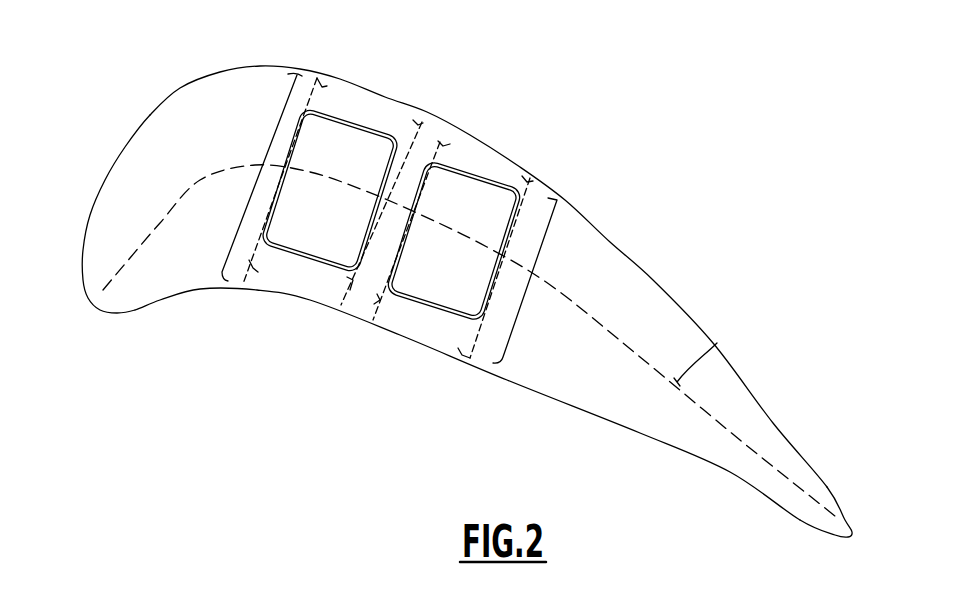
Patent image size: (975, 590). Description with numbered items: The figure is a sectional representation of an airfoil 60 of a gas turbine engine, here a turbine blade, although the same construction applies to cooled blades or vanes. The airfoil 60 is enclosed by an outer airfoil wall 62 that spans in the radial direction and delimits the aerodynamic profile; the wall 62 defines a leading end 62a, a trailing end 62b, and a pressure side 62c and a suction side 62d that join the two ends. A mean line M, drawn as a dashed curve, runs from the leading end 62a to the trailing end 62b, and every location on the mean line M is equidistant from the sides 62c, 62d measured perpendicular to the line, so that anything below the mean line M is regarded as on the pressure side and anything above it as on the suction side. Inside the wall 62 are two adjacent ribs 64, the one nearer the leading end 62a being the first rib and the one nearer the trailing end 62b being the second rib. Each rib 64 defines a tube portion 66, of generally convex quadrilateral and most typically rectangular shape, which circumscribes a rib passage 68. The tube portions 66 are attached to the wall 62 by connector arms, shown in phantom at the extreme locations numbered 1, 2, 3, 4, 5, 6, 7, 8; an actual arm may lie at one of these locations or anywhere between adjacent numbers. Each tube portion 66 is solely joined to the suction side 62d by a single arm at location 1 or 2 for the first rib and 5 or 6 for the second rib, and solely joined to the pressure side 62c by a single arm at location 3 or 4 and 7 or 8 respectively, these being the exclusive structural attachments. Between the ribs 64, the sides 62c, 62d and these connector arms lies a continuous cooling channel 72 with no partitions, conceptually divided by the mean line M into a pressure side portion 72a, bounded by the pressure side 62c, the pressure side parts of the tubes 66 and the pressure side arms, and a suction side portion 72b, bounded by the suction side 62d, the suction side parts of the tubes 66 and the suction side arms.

The airfoil 60 is at (668, 160).
The airfoil wall 62 is at (484, 279).
The leading end 62a is at (97, 303).
The trailing end 62b is at (853, 531).
The pressure side 62c is at (495, 373).
The suction side 62d is at (272, 67).
The rib 64 is at (280, 128).
The tube portion 66 is at (287, 153).
The rib passage 68 is at (340, 237).
The cooling channel 72 is at (365, 295).
The pressure side portion 72a is at (377, 247).
The suction side portion 72b is at (423, 152).
The connector arm location 1 is at (327, 85).
The connector arm location 2 is at (422, 122).
The connector arm location 3 is at (250, 262).
The connector arm location 4 is at (350, 290).
The connector arm location 5 is at (442, 143).
The connector arm location 6 is at (527, 178).
The connector arm location 7 is at (374, 304).
The connector arm location 8 is at (458, 348).
The mean line M is at (717, 343).